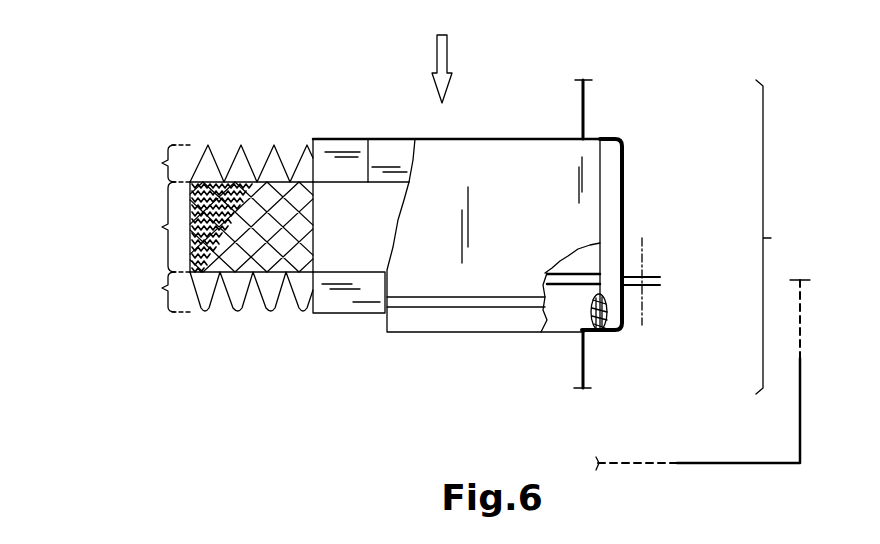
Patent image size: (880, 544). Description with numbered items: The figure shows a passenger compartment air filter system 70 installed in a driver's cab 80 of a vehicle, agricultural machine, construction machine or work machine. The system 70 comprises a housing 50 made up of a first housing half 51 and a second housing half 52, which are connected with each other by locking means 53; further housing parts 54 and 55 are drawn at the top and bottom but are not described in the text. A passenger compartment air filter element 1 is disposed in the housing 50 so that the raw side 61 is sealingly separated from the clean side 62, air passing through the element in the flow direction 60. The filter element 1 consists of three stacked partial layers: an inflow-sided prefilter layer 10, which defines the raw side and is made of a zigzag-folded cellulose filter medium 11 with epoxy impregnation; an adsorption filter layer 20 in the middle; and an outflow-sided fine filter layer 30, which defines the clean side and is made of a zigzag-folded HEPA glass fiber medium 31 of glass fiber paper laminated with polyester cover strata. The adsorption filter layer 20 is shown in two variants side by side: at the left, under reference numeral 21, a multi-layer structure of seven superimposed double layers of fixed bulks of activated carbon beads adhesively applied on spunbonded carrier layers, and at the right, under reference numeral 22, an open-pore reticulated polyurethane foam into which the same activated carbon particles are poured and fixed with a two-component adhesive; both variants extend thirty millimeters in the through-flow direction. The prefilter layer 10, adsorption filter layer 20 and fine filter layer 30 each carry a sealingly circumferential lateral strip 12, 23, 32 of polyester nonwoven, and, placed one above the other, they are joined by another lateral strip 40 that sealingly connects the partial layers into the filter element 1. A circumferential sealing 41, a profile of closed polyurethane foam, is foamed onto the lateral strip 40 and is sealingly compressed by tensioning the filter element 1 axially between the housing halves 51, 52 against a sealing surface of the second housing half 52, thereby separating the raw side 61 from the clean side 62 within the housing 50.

The passenger compartment air filter element 1 is at (418, 352).
The prefilter layer 10 is at (147, 156).
The zigzag-folded cellulose filter medium 11 is at (218, 140).
The lateral strip 12 is at (333, 136).
The adsorption filter layer 20 is at (147, 226).
The multi-layer structure of fixed bulks of activated carbon particles 21 is at (177, 208).
The open-pore foam with poured-in activated carbon 22 is at (292, 224).
The lateral strip 23 is at (371, 137).
The fine filter layer 30 is at (147, 288).
The zigzag-folded HEPA glass fiber medium 31 is at (293, 298).
The lateral strip 32 is at (345, 305).
The lateral strip 40 is at (497, 157).
The circumferential sealing 41 is at (520, 318).
The housing 50 is at (652, 163).
The first housing half 51 is at (627, 195).
The second housing half 52 is at (625, 323).
The locking means 53 is at (642, 247).
The upper flange 54 is at (590, 98).
The lower flange 55 is at (584, 360).
The flow direction 60 is at (448, 52).
The raw side 61 is at (533, 100).
The clean side 62 is at (474, 352).
The passenger compartment air filter system 70 is at (786, 237).
The driver's cab 80 is at (703, 467).